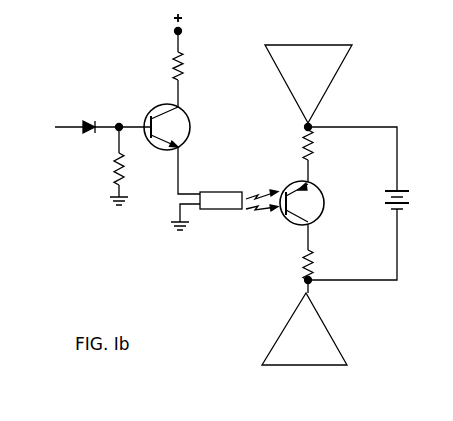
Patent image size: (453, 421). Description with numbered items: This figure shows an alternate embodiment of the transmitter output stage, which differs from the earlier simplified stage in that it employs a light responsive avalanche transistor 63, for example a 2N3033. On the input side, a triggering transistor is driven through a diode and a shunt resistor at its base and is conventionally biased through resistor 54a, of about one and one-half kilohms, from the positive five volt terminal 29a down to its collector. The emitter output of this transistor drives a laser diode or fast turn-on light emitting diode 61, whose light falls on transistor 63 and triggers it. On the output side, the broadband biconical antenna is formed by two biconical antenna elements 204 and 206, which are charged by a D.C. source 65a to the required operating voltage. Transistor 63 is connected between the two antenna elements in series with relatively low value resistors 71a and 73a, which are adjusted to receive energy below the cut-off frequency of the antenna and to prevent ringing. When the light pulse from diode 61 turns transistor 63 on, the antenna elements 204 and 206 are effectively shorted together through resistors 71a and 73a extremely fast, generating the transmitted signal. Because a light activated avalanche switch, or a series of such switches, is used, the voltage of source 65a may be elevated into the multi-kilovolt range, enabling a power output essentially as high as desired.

The +5 volt terminal 29a is at (175, 31).
The resistor 54a is at (183, 62).
The laser diode or fast turn-on LED 61 is at (226, 211).
The light responsive avalanche transistor 63 is at (288, 189).
The biconical antenna element 204 is at (335, 82).
The resistor 71a is at (314, 146).
The resistor 73a is at (313, 268).
The biconical antenna element 206 is at (335, 337).
The D.C. source 65a is at (404, 209).